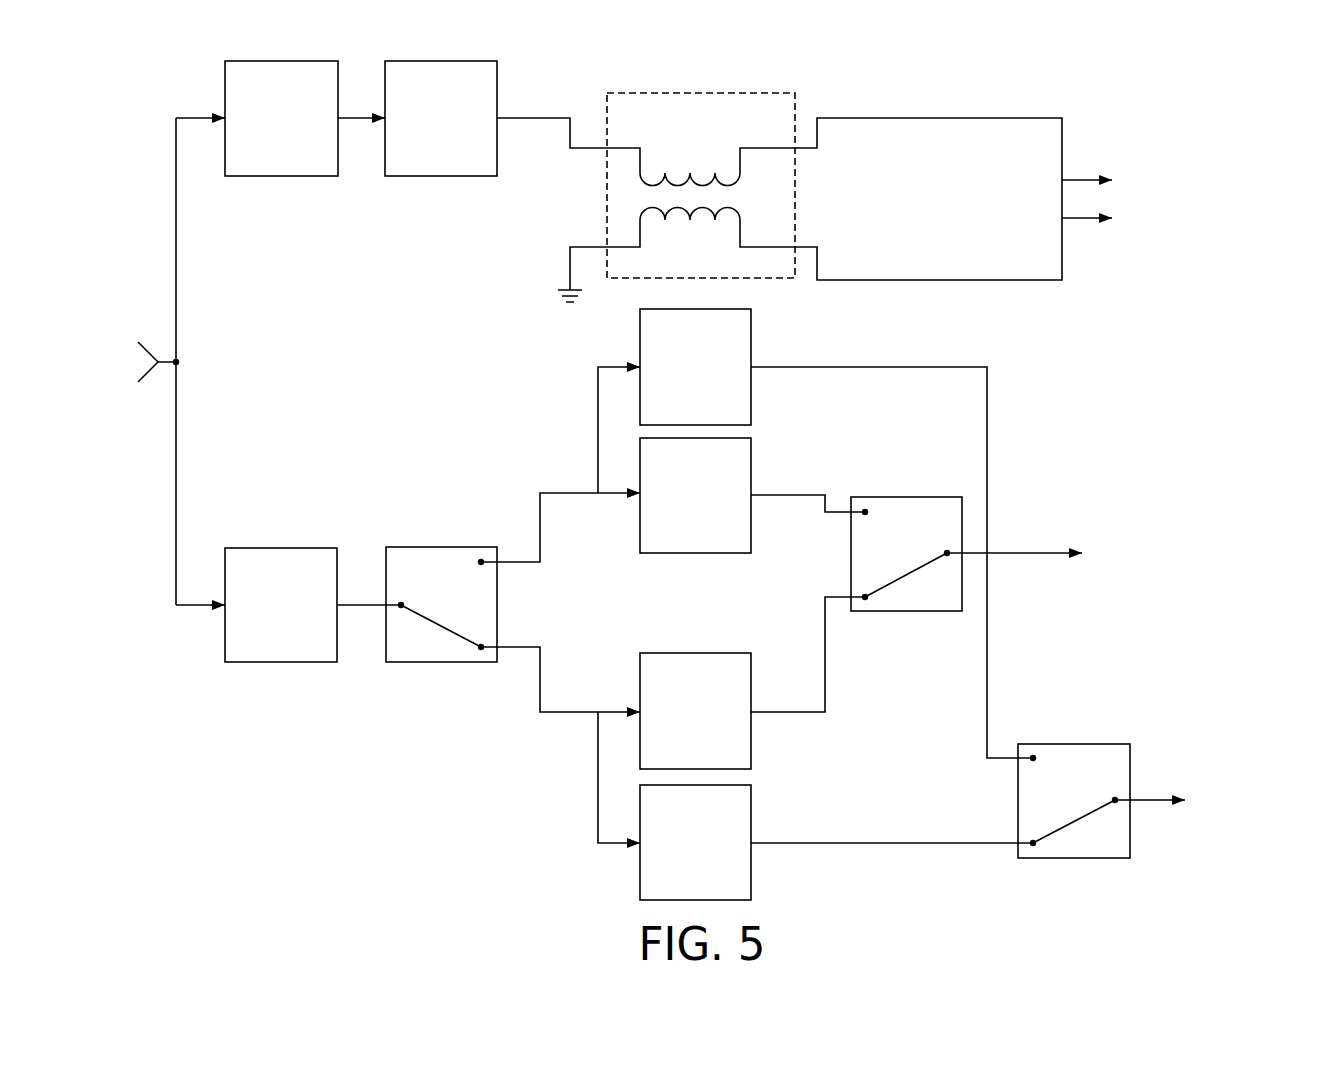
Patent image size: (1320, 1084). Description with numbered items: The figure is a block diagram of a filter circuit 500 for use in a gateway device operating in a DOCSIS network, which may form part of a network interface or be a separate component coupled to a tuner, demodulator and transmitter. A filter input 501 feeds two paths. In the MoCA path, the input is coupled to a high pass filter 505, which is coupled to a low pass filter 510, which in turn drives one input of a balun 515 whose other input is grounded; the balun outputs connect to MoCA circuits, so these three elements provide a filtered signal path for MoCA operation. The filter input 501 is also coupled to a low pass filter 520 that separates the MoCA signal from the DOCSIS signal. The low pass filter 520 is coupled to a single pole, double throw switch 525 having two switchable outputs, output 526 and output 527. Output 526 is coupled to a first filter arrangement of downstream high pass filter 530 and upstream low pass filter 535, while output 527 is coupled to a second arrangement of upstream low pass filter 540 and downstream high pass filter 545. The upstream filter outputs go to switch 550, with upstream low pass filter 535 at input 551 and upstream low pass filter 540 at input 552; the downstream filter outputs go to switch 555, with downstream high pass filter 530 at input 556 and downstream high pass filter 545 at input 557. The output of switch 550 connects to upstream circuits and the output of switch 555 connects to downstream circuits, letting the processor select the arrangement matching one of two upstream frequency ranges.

The filter circuit 500 is at (1090, 403).
The filter input 501 is at (138, 392).
The high pass filter (HPF) 505 is at (281, 118).
The low pass filter (LPF) 510 is at (441, 118).
The balun 515 is at (700, 93).
The low pass filter (LPF) 520 is at (281, 605).
The switch 525 is at (449, 607).
The output 526 is at (481, 538).
The output 527 is at (481, 670).
The downstream (DS) HPF 530 is at (695, 367).
The upstream (US) LPF 535 is at (695, 495).
The US LPF 540 is at (695, 711).
The DS HPF 545 is at (695, 842).
The switch 550 is at (897, 558).
The input 551 is at (866, 490).
The input 552 is at (873, 620).
The switch 555 is at (1074, 799).
The input 556 is at (1032, 730).
The input 557 is at (1033, 868).